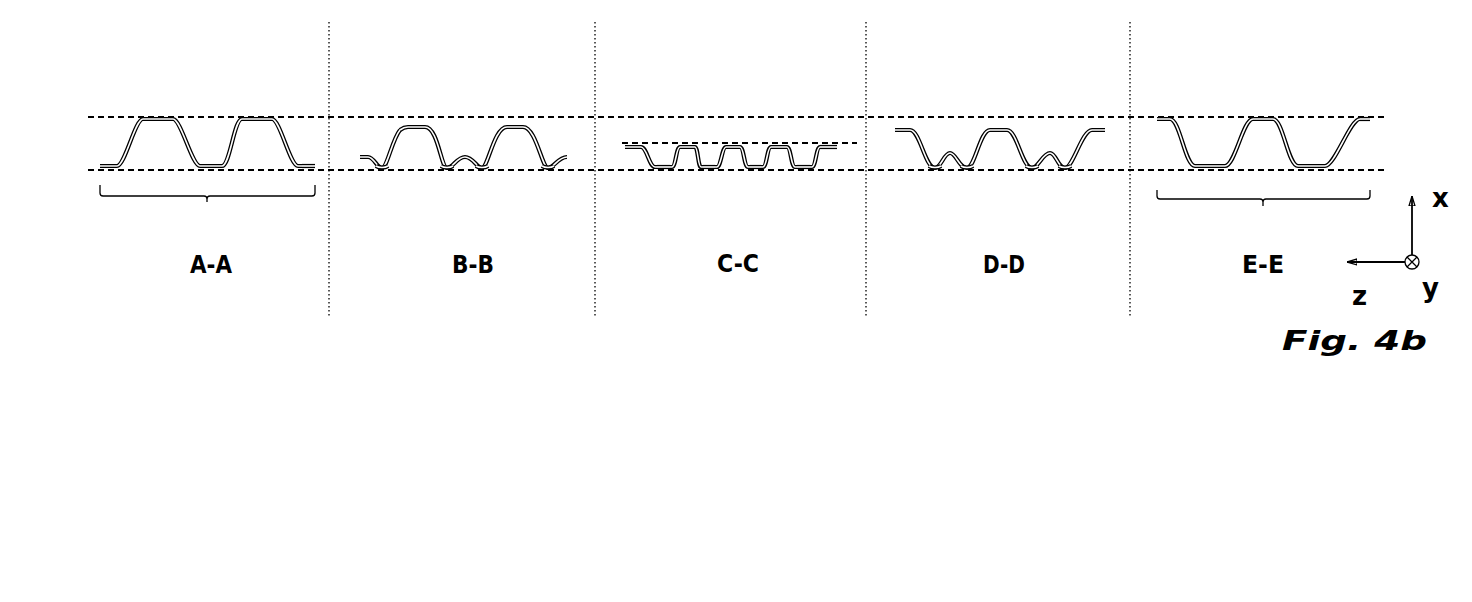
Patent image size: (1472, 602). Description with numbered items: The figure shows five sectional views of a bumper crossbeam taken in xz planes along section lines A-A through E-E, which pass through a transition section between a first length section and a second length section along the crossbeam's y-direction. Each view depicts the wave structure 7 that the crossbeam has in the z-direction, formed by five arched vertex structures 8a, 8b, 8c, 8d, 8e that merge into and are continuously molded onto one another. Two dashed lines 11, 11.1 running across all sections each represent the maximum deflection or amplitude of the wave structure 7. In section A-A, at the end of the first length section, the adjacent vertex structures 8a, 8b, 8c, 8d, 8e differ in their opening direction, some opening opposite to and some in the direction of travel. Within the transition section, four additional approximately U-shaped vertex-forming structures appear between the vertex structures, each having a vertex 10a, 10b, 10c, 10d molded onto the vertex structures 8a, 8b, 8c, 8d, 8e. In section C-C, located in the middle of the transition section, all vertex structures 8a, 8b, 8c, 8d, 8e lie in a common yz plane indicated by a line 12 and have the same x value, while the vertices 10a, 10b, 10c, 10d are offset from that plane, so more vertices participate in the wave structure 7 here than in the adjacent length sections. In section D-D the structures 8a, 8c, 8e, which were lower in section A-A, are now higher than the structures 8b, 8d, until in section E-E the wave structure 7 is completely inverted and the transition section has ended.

The wave structure 7 is at (735, 214).
The vertex structure 8a is at (112, 156).
The vertex structure 8b is at (153, 106).
The vertex structure 8c is at (208, 155).
The vertex structure 8d is at (255, 108).
The vertex structure 8e is at (305, 156).
The vertex 10a is at (383, 174).
The vertex 10b is at (447, 174).
The vertex 10c is at (482, 174).
The vertex 10d is at (548, 174).
The line 11 is at (1388, 111).
The line 11.1 is at (1378, 165).
The line 12 is at (847, 140).